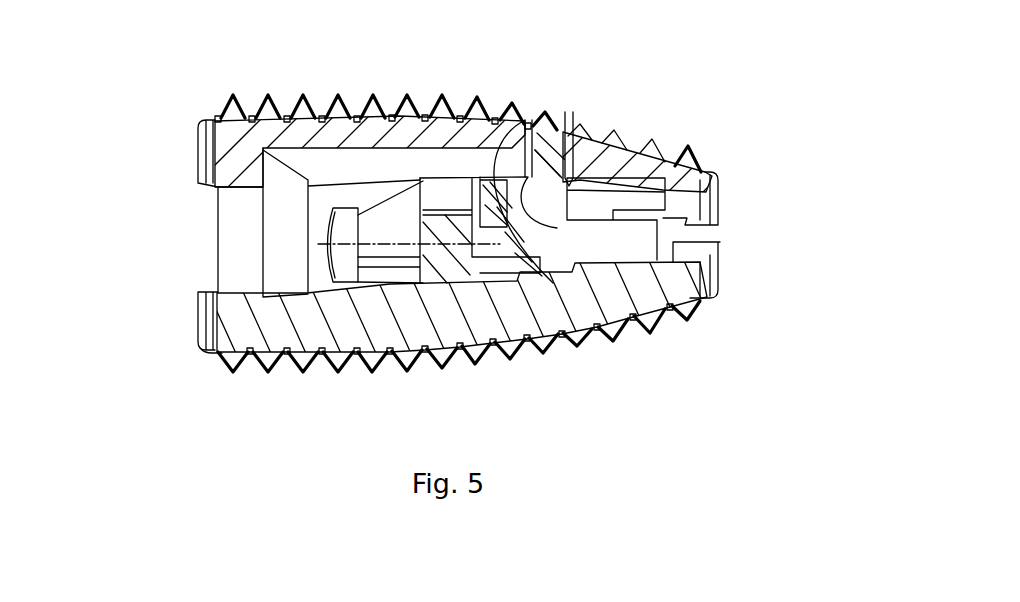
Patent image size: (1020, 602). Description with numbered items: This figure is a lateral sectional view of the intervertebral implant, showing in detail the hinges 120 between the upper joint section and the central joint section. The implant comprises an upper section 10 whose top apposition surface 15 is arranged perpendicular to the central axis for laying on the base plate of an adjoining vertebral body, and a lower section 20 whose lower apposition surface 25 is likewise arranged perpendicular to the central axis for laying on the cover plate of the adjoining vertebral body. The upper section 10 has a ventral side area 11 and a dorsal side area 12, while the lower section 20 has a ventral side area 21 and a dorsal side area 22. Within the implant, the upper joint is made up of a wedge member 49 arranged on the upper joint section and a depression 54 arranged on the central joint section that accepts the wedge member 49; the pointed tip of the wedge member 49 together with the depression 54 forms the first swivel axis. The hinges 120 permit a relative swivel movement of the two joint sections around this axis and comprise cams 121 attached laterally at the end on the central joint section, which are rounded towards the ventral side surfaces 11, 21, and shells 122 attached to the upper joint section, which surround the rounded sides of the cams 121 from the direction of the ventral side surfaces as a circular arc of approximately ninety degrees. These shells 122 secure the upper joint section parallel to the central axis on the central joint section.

The upper section 10 is at (237, 160).
The ventral side area 11 is at (197, 140).
The top apposition surface 15 is at (217, 120).
The lower section 20 is at (210, 292).
The ventral side area 21 is at (200, 308).
The lower apposition surface 25 is at (217, 350).
The dorsal side area 12 is at (722, 192).
The dorsal side area 22 is at (723, 273).
The hinges 120 is at (800, 418).
The cams 121 is at (638, 142).
The shells 122 is at (562, 230).
The depression 54 is at (520, 128).
The wedge member 49 is at (572, 120).